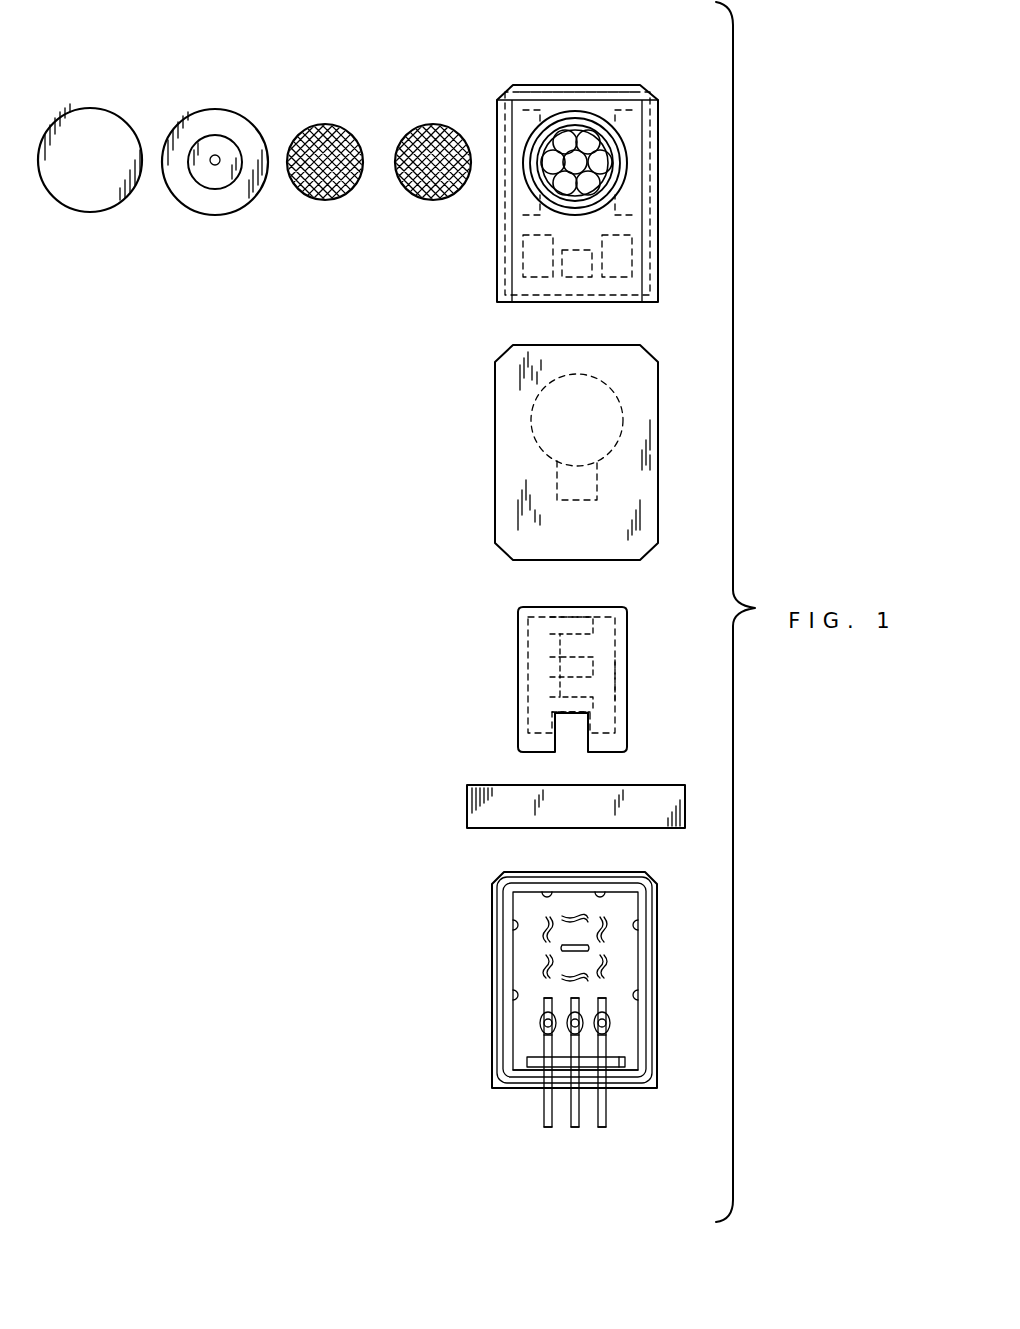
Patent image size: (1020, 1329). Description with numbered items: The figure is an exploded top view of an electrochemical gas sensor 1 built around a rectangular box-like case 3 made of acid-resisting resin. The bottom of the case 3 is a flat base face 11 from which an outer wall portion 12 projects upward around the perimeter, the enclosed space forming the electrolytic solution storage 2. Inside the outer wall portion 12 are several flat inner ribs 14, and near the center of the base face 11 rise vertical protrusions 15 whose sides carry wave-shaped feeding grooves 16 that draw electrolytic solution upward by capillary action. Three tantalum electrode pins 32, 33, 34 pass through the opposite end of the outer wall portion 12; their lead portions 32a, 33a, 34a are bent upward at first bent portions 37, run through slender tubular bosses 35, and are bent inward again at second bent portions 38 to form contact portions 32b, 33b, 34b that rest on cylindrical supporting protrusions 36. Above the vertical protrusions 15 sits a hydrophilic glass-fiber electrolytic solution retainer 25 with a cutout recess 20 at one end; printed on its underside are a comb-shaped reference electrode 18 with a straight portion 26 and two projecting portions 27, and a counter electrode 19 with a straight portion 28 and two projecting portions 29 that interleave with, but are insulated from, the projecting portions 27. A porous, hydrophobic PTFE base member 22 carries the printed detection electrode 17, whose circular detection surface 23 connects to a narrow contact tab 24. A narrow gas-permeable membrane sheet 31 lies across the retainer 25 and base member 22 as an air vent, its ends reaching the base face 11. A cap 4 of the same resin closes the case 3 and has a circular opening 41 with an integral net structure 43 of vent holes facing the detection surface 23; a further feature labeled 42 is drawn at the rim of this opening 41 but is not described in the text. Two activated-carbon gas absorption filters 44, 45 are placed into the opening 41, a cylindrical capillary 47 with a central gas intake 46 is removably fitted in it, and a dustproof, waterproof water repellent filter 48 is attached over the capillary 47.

The electrochemical gas sensor 1 is at (370, 42).
The electrolytic solution storage 2 is at (525, 895).
The case 3 is at (484, 939).
The cap 4 is at (497, 280).
The base face 11 is at (527, 1062).
The outer wall portion 12 is at (503, 920).
The inner ribs 14 is at (582, 892).
The vertical protrusions 15 is at (565, 978).
The feeding grooves 16 is at (600, 925).
The detection electrode 17 is at (530, 436).
The reference electrode 18 is at (520, 718).
The counter electrode 19 is at (552, 622).
The cutout recess 20 is at (569, 738).
The base member 22 is at (488, 521).
The detection surface 23 is at (617, 400).
The contact tab 24 is at (597, 487).
The electrolytic solution retainer 25 is at (511, 648).
The straight portion 26 is at (555, 706).
The projecting portions 27 is at (583, 690).
The straight portion 28 is at (615, 670).
The projecting portions 29 is at (575, 657).
The membrane sheet 31 is at (467, 800).
The electrode pin 32 is at (544, 1110).
The lead portion 32a is at (548, 1128).
The contact portion 32b is at (544, 1003).
The electrode pin 33 is at (606, 1120).
The lead portion 33a is at (603, 1130).
The contact portion 33b is at (606, 1003).
The electrode pin 34 is at (573, 1127).
The lead portion 34a is at (575, 1130).
The contact portion 34b is at (571, 1008).
The bosses 35 is at (602, 1040).
The supporting protrusions 36 is at (541, 1023).
The first bent portions 37 is at (620, 1060).
The second bent portions 38 is at (510, 1078).
The opening 41 is at (548, 192).
The lens ring 42 is at (602, 160).
The net structure 43 is at (608, 178).
The gas absorption filter 44 is at (445, 126).
The gas absorption filter 45 is at (337, 126).
The gas intake 46 is at (216, 166).
The capillary 47 is at (230, 112).
The water repellent filter 48 is at (98, 212).